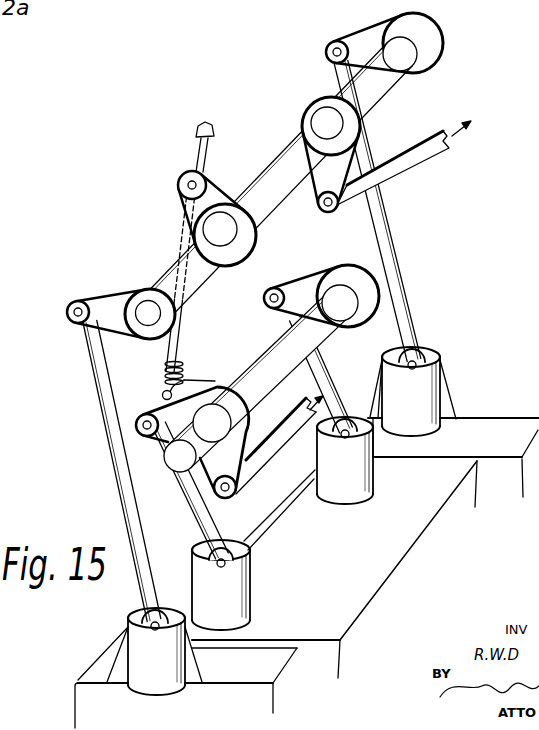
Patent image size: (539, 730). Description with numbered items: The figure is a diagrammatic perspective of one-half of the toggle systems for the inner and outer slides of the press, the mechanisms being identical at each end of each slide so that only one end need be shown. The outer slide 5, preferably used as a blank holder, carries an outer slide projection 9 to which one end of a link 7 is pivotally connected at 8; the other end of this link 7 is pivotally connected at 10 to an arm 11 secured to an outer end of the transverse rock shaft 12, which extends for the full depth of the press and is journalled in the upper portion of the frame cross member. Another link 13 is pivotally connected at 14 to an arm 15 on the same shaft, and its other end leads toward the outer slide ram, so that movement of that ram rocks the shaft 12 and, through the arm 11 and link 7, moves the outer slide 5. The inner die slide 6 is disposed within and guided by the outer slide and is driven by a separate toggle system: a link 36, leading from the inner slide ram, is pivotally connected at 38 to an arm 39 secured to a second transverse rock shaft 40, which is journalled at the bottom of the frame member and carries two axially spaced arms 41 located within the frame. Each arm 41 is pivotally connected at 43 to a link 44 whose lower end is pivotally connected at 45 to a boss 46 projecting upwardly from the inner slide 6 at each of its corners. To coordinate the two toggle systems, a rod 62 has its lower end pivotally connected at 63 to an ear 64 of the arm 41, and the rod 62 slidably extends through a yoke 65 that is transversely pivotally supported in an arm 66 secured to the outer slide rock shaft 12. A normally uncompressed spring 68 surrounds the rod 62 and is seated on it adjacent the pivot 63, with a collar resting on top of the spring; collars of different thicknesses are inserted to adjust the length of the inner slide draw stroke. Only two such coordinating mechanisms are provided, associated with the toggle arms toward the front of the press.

The outer slide 5 is at (510, 426).
The inner die slide 6 is at (412, 472).
The link 7 is at (406, 302).
The pivotal connection 8 is at (424, 365).
The outer slide projection 9 is at (434, 387).
The pivotal connection 10 is at (327, 52).
The arm 11 is at (366, 29).
The transverse rock shaft 12 is at (270, 177).
The link 13 is at (405, 160).
The pivotal connection 14 is at (322, 206).
The arm 15 is at (318, 184).
The link 36 is at (268, 453).
The pivotal connection 38 is at (226, 498).
The arm 39 is at (245, 474).
The transverse rock shaft 40 is at (266, 364).
The arm 41 is at (166, 440).
The pivotal connection 43 is at (265, 296).
The link 44 is at (321, 367).
The pivotal connection 45 is at (236, 553).
The boss 46 is at (364, 473).
The rod 62 is at (183, 327).
The pivotal connection 63 is at (164, 393).
The ear 64 is at (189, 381).
The yoke 65 is at (208, 170).
The arm 66 is at (228, 186).
The spring 68 is at (168, 368).